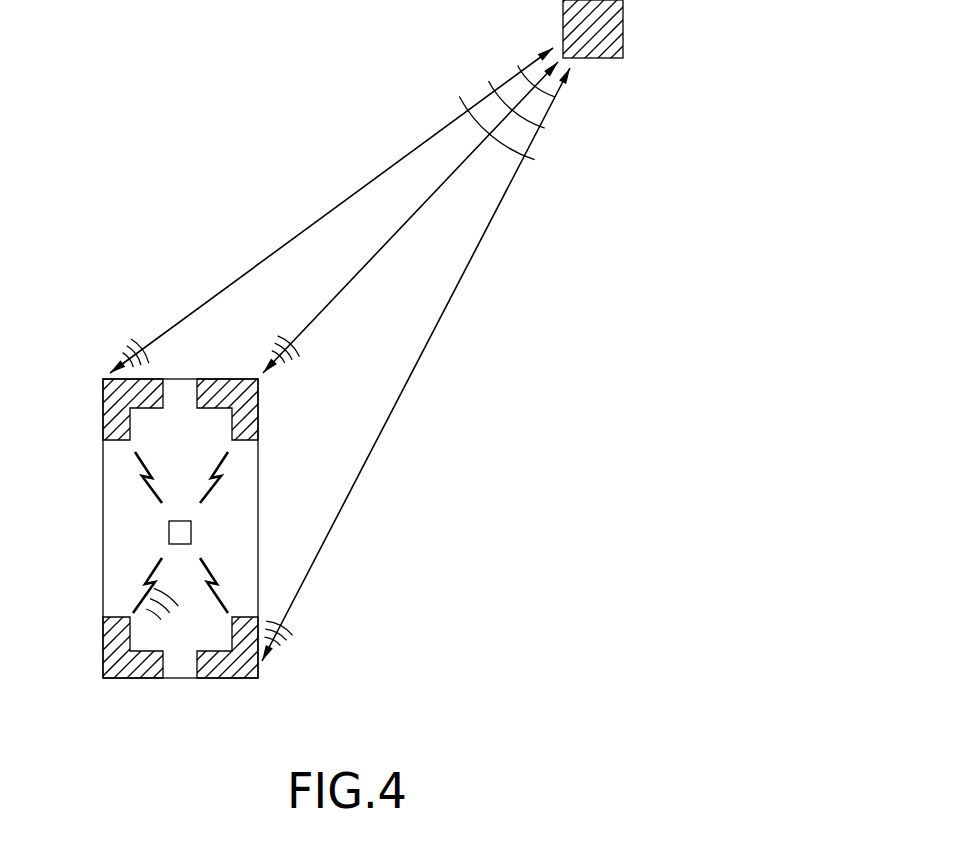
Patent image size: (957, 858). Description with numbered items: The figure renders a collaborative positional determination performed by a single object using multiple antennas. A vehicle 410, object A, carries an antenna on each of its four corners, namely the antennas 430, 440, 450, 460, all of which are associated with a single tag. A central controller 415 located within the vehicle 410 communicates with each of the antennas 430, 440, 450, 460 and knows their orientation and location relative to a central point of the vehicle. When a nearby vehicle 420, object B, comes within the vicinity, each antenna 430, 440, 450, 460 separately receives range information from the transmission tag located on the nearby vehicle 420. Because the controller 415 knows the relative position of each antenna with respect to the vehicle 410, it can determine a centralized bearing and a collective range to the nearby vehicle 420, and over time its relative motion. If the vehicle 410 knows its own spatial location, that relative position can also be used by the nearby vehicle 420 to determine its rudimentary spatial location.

The vehicle 410 is at (258, 527).
The central controller 415 is at (168, 534).
The nearby vehicle 420 is at (560, 25).
The corner antenna 430 is at (103, 420).
The corner antenna 440 is at (258, 407).
The corner antenna 450 is at (252, 665).
The corner antenna 460 is at (113, 673).